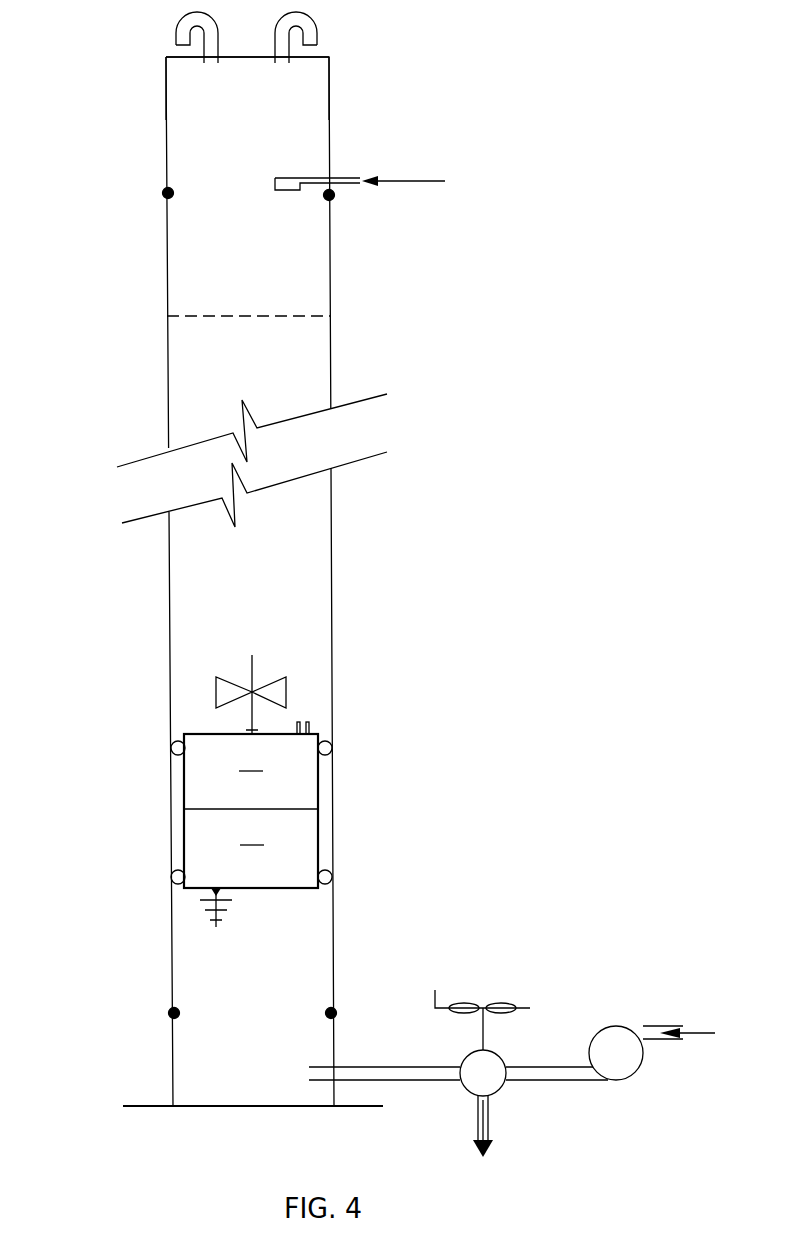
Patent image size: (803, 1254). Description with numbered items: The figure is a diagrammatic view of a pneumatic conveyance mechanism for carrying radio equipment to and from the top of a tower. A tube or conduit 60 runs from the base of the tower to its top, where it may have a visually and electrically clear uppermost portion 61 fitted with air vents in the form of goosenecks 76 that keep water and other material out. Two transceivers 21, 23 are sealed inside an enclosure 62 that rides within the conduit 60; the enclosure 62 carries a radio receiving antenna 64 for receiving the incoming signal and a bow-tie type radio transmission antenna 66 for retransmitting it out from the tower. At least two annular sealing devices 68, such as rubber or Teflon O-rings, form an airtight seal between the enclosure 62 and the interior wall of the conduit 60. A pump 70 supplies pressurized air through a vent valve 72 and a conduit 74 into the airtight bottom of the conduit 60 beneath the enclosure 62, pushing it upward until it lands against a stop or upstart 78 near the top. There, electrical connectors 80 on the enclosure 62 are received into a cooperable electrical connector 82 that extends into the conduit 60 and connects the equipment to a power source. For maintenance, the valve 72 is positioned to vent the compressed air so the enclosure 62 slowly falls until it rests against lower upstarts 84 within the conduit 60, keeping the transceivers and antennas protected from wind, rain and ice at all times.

The transceiver 21 is at (252, 832).
The transceiver 23 is at (251, 758).
The conduit 60 is at (331, 513).
The uppermost portion 61 is at (330, 86).
The enclosure 62 is at (318, 811).
The radio receiving antenna 64 is at (207, 912).
The radio transmission antenna 66 is at (286, 674).
The annular sealing devices 68 is at (190, 726).
The pump 70 is at (620, 1027).
The vent valve 72 is at (503, 1058).
The conduit 74 is at (400, 1083).
The goosenecks 76 is at (176, 30).
The stop or upstart 78 is at (330, 195).
The electrical connectors 80 is at (310, 720).
The cooperable electrical connector 82 is at (283, 178).
The lower upstarts 84 is at (174, 1013).